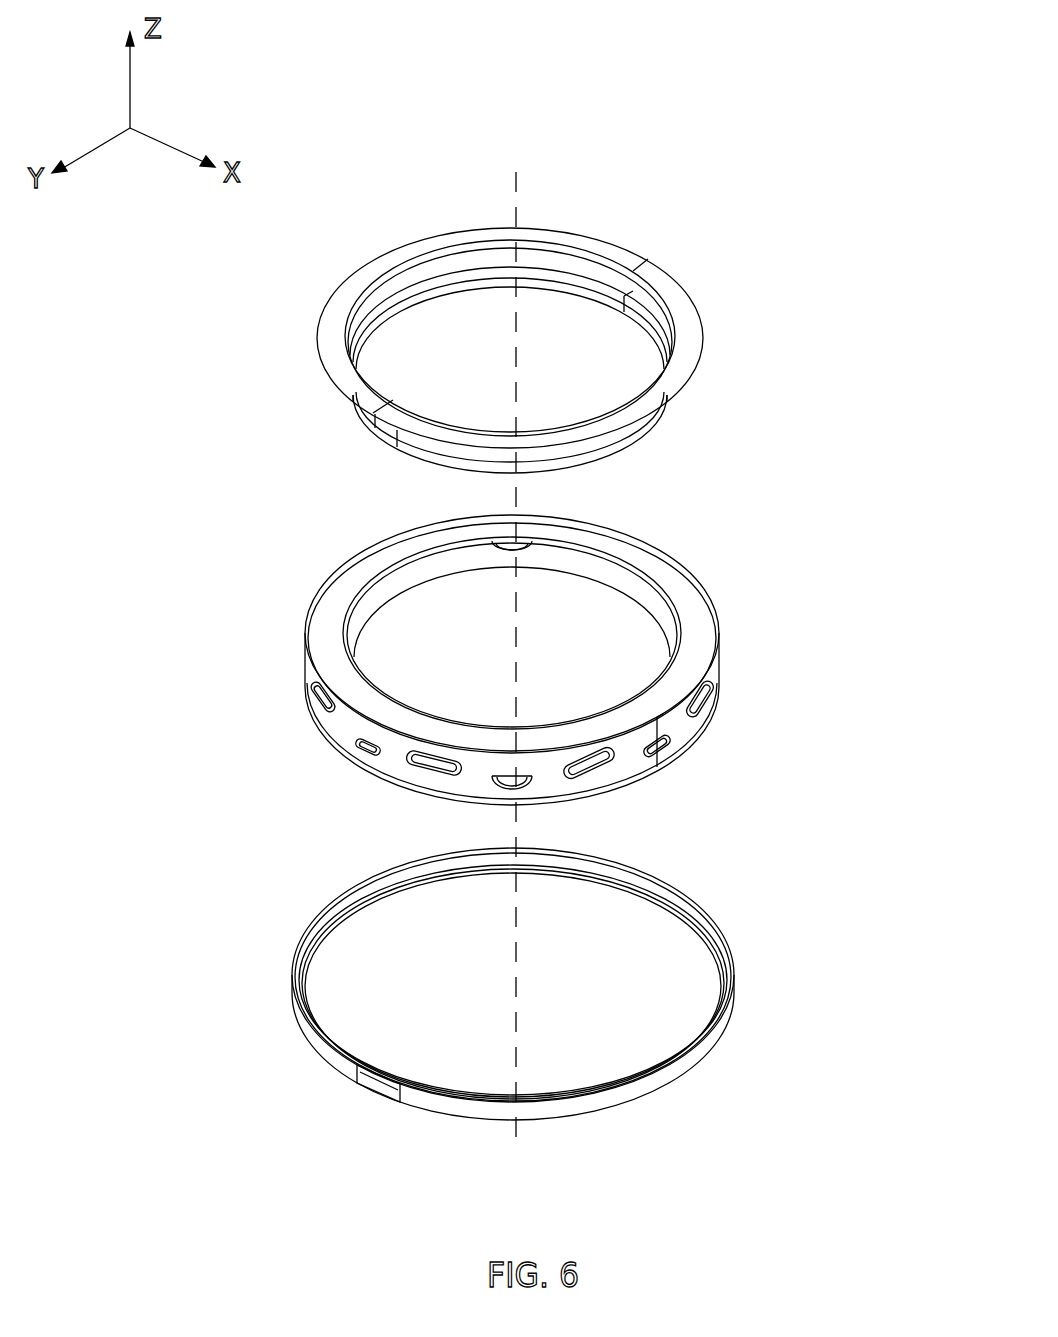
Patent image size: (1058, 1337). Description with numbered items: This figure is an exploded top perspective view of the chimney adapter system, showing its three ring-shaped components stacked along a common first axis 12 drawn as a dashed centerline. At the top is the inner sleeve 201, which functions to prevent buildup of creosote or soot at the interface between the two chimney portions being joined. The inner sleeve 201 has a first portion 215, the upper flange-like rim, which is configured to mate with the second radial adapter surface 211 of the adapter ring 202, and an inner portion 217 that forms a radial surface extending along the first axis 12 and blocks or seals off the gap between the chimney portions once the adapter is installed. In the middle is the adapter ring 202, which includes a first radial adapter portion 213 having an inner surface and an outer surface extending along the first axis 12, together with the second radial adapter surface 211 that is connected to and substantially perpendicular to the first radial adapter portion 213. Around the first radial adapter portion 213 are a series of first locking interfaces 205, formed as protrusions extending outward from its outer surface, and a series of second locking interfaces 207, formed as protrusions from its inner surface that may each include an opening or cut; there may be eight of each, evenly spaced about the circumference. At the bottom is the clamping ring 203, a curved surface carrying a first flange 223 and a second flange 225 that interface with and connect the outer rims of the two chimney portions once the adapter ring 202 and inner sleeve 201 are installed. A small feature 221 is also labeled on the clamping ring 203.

The first axis 12 is at (515, 190).
The inner sleeve 201 is at (595, 324).
The adapter ring 202 is at (601, 666).
The clamping ring 203 is at (592, 986).
The first locking interface 205 is at (320, 698).
The second locking interface 207 is at (368, 748).
The second radial adapter surface 211 is at (341, 614).
The first radial adapter portion 213 is at (683, 730).
The first portion 215 is at (340, 302).
The inner portion 217 is at (552, 260).
The tab of lower ring 221 is at (340, 1060).
The first flange 223 is at (322, 912).
The second flange 225 is at (378, 898).